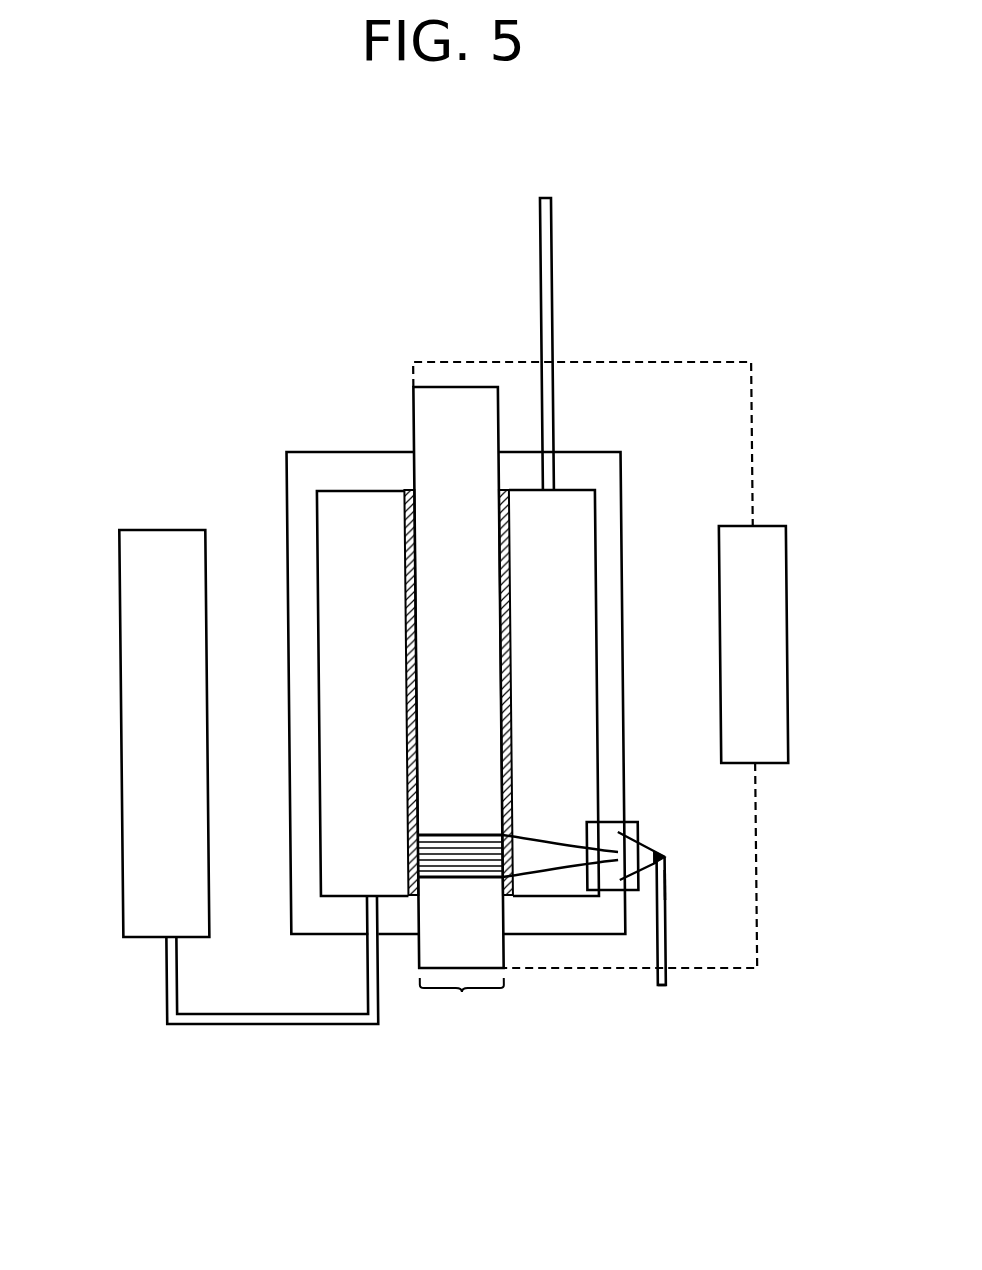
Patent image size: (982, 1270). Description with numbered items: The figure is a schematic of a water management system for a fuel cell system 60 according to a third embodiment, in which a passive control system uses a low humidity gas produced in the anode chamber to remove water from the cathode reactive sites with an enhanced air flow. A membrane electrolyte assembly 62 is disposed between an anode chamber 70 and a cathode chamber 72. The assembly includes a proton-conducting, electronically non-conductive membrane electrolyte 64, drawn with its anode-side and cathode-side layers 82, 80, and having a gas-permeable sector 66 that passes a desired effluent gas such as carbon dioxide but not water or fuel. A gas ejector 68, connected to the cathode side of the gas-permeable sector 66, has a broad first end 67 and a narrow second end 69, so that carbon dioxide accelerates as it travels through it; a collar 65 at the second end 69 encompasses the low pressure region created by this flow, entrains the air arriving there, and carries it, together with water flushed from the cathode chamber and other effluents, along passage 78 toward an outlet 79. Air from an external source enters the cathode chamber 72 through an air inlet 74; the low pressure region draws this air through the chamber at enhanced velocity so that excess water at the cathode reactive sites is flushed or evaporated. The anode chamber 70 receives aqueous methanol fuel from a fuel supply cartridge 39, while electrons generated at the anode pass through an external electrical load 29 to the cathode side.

The fuel cell system 60 is at (128, 291).
The air inlet 74 is at (550, 268).
The cathode chamber 72 is at (563, 507).
The anode chamber 70 is at (335, 533).
The membrane electrolyte 64 is at (437, 585).
The cathode 80 is at (504, 593).
The anode 82 is at (397, 765).
The gas-permeable sector 66 is at (460, 850).
The gas ejector 68 is at (510, 850).
The collar 65 is at (602, 830).
The flow passage 78 is at (632, 828).
The second end 69 is at (581, 862).
The outlet 79 is at (656, 878).
The membrane electrolyte assembly 62 is at (462, 1002).
The first end 67 is at (494, 877).
The fuel supply cartridge 39 is at (130, 700).
The external electrical load 29 is at (763, 677).